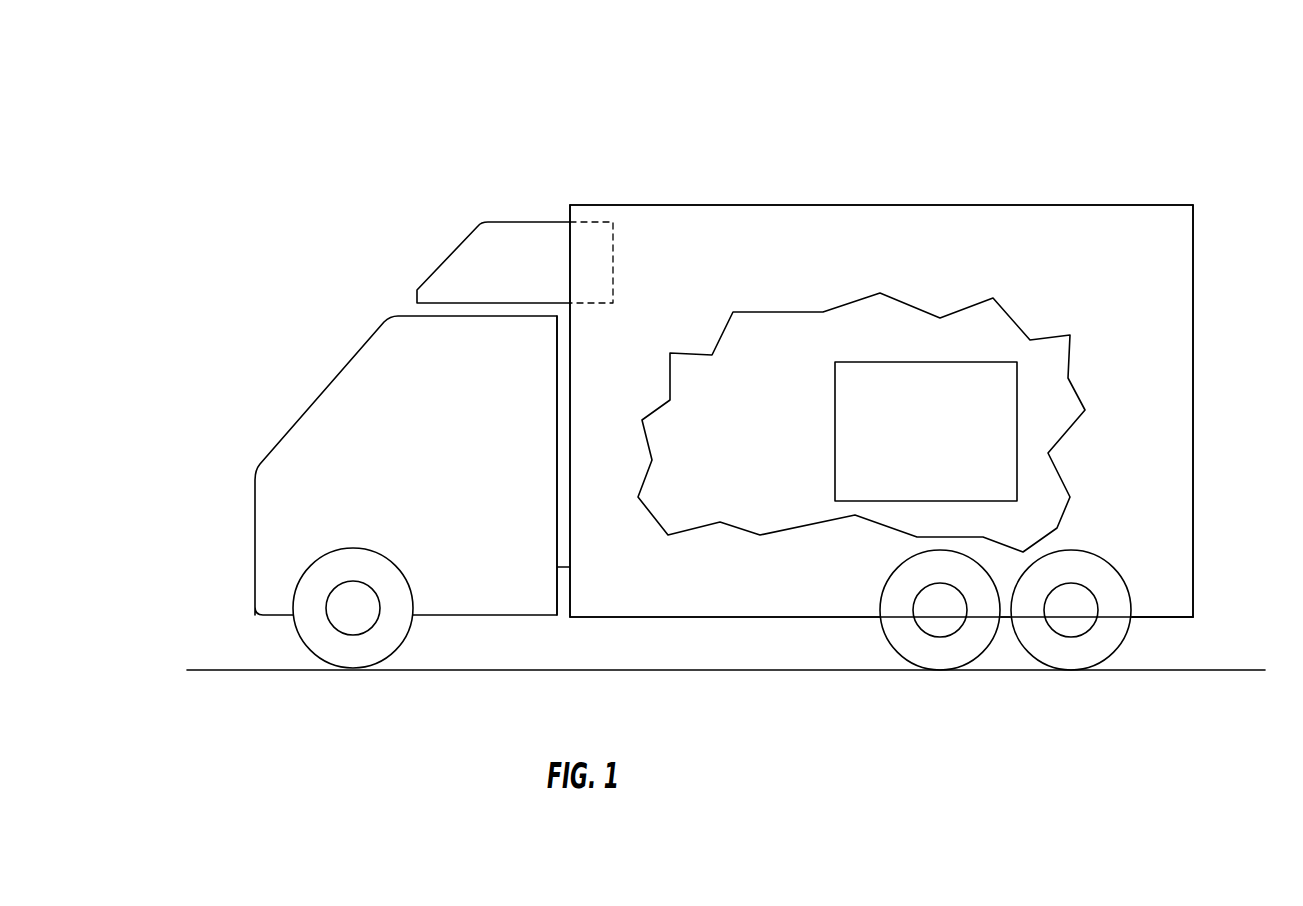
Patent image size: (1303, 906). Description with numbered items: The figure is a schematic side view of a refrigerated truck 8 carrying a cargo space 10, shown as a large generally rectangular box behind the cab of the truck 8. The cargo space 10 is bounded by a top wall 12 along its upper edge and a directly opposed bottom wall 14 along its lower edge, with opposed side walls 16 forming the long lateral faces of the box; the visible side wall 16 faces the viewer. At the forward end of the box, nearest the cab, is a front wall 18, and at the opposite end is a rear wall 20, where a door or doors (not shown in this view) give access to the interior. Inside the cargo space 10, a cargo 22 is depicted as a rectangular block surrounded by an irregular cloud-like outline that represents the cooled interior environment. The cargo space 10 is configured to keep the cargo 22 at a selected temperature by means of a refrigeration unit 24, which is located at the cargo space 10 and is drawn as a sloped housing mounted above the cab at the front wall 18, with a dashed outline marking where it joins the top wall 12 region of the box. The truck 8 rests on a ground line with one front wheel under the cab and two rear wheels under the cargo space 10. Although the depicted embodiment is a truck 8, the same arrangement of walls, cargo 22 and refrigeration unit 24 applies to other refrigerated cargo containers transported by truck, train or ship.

The refrigerated truck 8 is at (346, 84).
The cargo space 10 is at (1193, 372).
The top wall 12 is at (848, 205).
The bottom wall 14 is at (720, 617).
The side walls 16 is at (1173, 463).
The front wall 18 is at (568, 436).
The rear wall 20 is at (1193, 530).
The cargo 22 is at (912, 447).
The refrigeration unit 24 is at (475, 255).